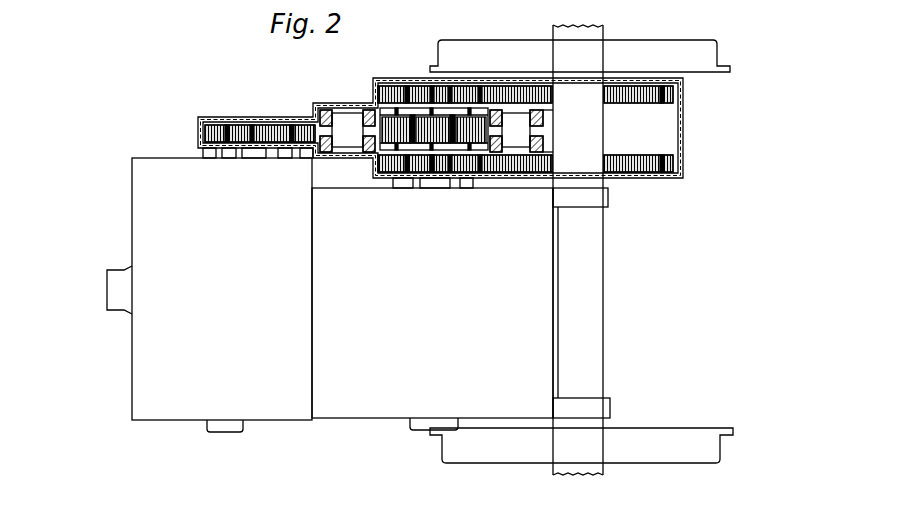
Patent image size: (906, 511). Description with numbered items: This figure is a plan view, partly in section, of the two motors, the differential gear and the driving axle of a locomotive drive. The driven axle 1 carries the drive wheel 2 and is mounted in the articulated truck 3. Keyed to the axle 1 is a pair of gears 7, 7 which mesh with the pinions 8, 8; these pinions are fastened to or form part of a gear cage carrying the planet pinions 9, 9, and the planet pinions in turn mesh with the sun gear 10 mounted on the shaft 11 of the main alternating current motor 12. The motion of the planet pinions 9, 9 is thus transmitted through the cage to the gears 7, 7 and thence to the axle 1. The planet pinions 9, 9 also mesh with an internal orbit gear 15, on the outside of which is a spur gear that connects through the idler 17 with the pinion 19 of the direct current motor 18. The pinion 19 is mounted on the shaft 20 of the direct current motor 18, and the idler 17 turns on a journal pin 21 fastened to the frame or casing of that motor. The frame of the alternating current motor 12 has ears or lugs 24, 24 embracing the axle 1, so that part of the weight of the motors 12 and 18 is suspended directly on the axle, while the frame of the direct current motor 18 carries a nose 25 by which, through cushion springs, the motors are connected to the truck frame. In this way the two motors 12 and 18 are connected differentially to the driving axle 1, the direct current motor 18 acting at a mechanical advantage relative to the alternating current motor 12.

The driven axle 1 is at (603, 131).
The drive wheel 2 is at (710, 55).
The truck 3 is at (102, 137).
The gears 7 is at (672, 95).
The pinions 8 is at (399, 90).
The planet pinions 9 is at (372, 152).
The sun gear 10 is at (438, 150).
The shaft 11 is at (432, 166).
The alternating current motor 12 is at (432, 304).
The internal orbit gear 15 is at (366, 112).
The idler 17 is at (258, 125).
The direct current motor 18 is at (222, 295).
The pinion 19 is at (205, 148).
The shaft 20 is at (227, 148).
The journal pin 21 is at (279, 148).
The ears or lugs 24 is at (603, 197).
The nose 25 is at (117, 295).